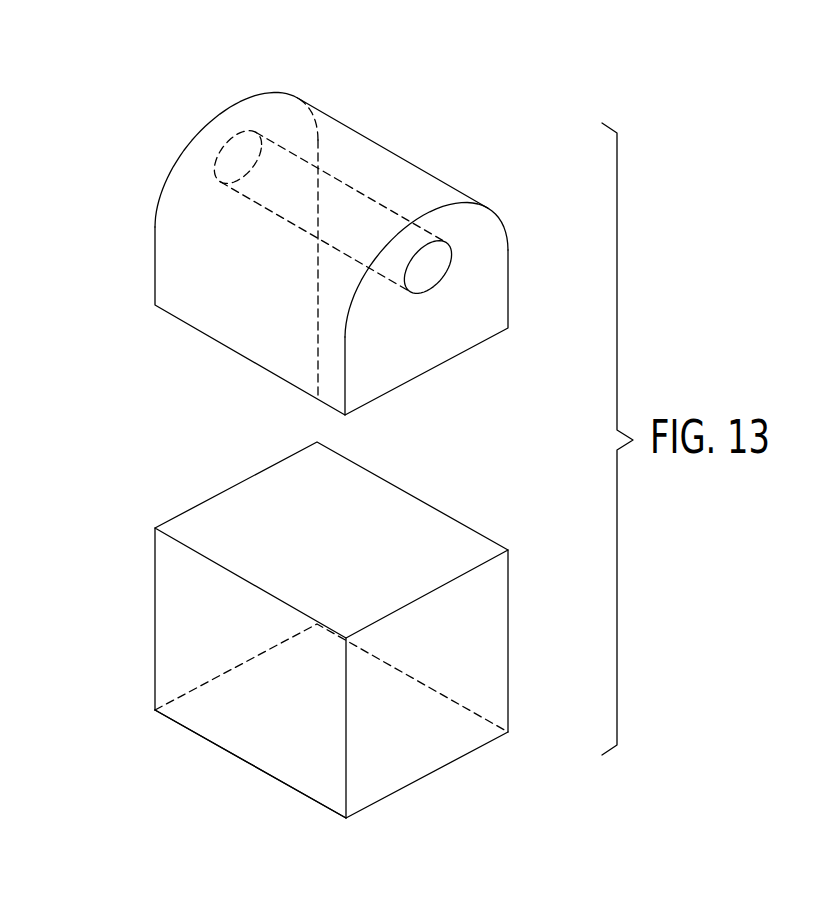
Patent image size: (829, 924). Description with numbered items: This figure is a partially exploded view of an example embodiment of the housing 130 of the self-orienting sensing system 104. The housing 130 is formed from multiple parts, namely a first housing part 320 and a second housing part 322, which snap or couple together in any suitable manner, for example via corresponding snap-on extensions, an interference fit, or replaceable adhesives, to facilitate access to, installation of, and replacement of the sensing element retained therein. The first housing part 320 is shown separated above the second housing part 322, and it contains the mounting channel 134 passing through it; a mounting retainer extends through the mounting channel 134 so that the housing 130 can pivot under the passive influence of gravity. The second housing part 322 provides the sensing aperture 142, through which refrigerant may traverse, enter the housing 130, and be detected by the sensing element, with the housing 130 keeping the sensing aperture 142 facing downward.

The self-orienting sensing system 104 is at (279, 227).
The first housing part 320 is at (155, 262).
The mounting channel 134 is at (355, 190).
The housing 130 is at (316, 623).
The second housing part 322 is at (155, 615).
The sensing aperture 142 is at (292, 742).